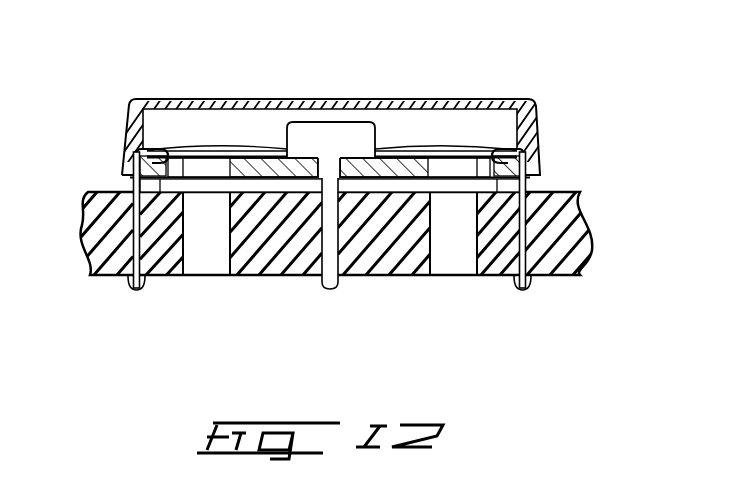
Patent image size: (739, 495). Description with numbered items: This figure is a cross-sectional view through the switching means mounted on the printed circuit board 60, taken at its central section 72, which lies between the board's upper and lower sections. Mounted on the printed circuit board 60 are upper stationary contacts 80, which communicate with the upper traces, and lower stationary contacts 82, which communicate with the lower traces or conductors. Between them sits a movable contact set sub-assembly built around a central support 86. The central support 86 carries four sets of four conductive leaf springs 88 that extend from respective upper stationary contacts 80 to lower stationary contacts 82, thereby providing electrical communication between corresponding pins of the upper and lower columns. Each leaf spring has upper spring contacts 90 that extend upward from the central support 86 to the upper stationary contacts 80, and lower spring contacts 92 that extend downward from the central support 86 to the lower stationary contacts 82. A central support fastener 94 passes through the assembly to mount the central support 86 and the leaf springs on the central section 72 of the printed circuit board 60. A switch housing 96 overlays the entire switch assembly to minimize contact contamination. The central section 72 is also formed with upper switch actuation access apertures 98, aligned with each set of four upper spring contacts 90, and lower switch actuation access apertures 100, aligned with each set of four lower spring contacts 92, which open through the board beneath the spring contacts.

The printed circuit board 60 is at (566, 242).
The central section 72 is at (557, 196).
The upper stationary contacts 80 is at (158, 156).
The lower stationary contacts 82 is at (530, 131).
The central support 86 is at (331, 130).
The leaf springs 88 is at (228, 147).
The upper spring contacts 90 is at (187, 147).
The lower spring contacts 92 is at (447, 145).
The central support fastener 94 is at (330, 292).
The switch housing 96 is at (448, 105).
The upper switch actuation access apertures 98 is at (203, 268).
The lower switch actuation access apertures 100 is at (453, 268).